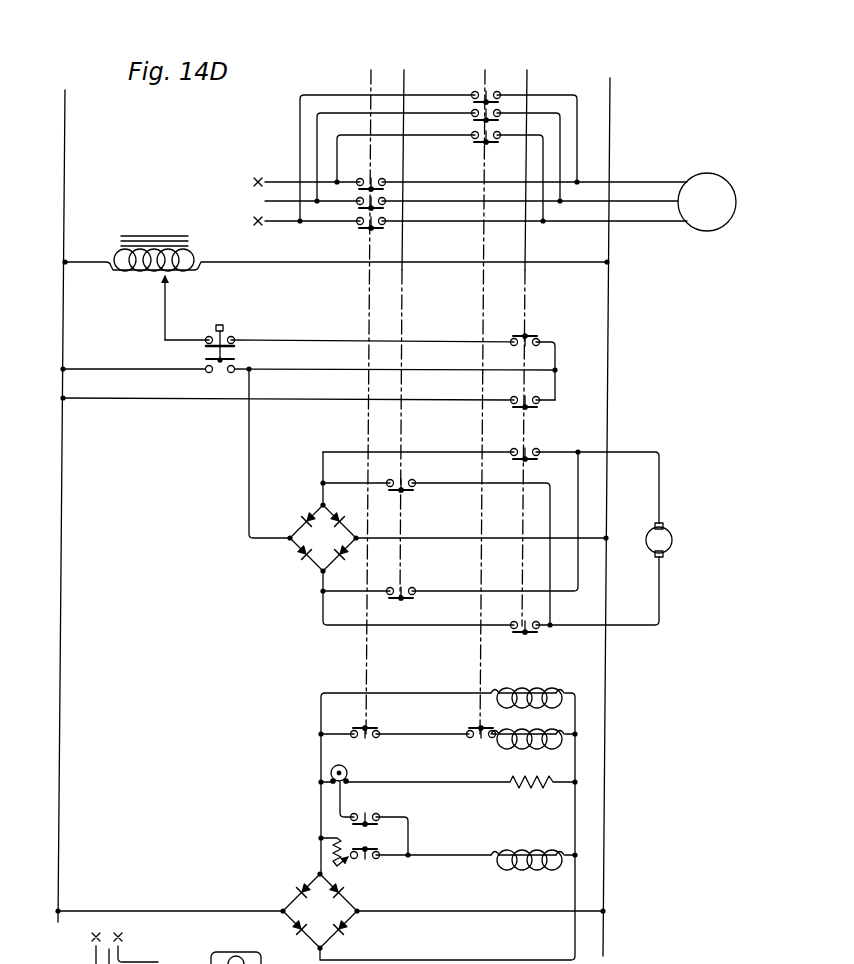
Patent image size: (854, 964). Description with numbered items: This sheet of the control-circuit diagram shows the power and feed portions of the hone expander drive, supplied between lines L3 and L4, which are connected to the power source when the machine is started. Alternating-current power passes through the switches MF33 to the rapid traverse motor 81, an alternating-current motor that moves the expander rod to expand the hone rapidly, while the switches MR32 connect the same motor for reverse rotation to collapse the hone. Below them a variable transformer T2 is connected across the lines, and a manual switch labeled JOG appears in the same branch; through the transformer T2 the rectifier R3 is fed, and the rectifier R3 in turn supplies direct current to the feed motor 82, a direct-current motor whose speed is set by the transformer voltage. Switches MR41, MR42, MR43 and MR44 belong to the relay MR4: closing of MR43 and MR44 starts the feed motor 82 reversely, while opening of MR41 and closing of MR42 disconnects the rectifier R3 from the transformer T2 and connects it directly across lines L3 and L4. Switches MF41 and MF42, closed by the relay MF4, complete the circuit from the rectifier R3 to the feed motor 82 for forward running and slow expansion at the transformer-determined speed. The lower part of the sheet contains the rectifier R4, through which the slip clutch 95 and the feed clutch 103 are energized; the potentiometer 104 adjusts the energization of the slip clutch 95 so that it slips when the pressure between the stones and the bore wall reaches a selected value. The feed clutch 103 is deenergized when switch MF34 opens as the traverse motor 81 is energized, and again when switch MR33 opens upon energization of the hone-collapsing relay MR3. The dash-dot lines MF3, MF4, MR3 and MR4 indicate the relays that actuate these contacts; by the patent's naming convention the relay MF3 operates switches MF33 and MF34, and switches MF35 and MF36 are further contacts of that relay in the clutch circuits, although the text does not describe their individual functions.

The rapid traverse motor 81 is at (726, 190).
The feed motor 82 is at (672, 545).
The magnetic clutch 95 is at (530, 850).
The feed clutch 103 is at (542, 750).
The potentiometer 104 is at (329, 768).
The rectifier R3 is at (292, 555).
The rectifier R4 is at (290, 892).
The variable transformer T2 is at (189, 242).
The line L3 is at (56, 494).
The line L4 is at (603, 505).
The forward relay line MF3 is at (365, 391).
The relay MF4 is at (403, 324).
The hone collapsing relay MR3 is at (481, 391).
The relay MR4 is at (524, 337).
The switches MR32 is at (472, 88).
The switches MF33 is at (366, 227).
The jog pushbutton JOG is at (200, 339).
The switch MR41 is at (531, 339).
The switch MR42 is at (533, 409).
The switch MR43 is at (530, 456).
The switch MR44 is at (531, 633).
The switch MF41 is at (405, 480).
The switch MF42 is at (405, 588).
The switch MF34 is at (370, 731).
The switch MR33 is at (478, 740).
The relay contact MF35 is at (372, 815).
The relay contact MF36 is at (373, 862).